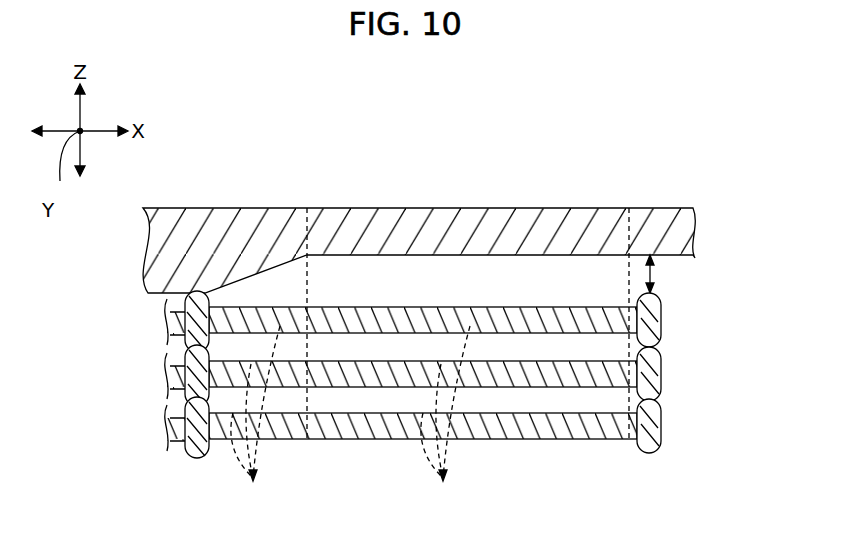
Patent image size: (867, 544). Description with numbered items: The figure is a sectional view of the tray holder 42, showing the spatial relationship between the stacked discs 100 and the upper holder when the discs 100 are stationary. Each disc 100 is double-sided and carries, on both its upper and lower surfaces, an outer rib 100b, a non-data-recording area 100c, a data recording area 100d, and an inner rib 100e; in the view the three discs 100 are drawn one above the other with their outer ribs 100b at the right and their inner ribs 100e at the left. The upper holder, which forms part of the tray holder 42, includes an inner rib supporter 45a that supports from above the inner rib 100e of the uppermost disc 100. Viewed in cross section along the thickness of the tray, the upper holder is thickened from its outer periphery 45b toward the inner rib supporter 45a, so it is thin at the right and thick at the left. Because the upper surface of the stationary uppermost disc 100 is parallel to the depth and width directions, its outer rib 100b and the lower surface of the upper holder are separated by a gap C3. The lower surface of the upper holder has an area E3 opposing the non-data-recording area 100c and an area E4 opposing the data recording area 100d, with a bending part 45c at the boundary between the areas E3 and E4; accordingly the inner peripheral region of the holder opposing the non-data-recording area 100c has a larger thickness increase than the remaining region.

The tray holder 42 is at (153, 243).
The inner rib supporter 45a is at (208, 216).
The outer periphery 45b is at (643, 218).
The bending part 45c is at (308, 252).
The area opposing non-data-recording area E3 is at (264, 194).
The area opposing data recording area E4 is at (409, 194).
The gap C3 is at (645, 274).
The disc 100 is at (662, 324).
The outer rib 100b is at (662, 296).
The non-data-recording area 100c is at (254, 418).
The data recording area 100d is at (444, 418).
The inner rib 100e is at (174, 296).